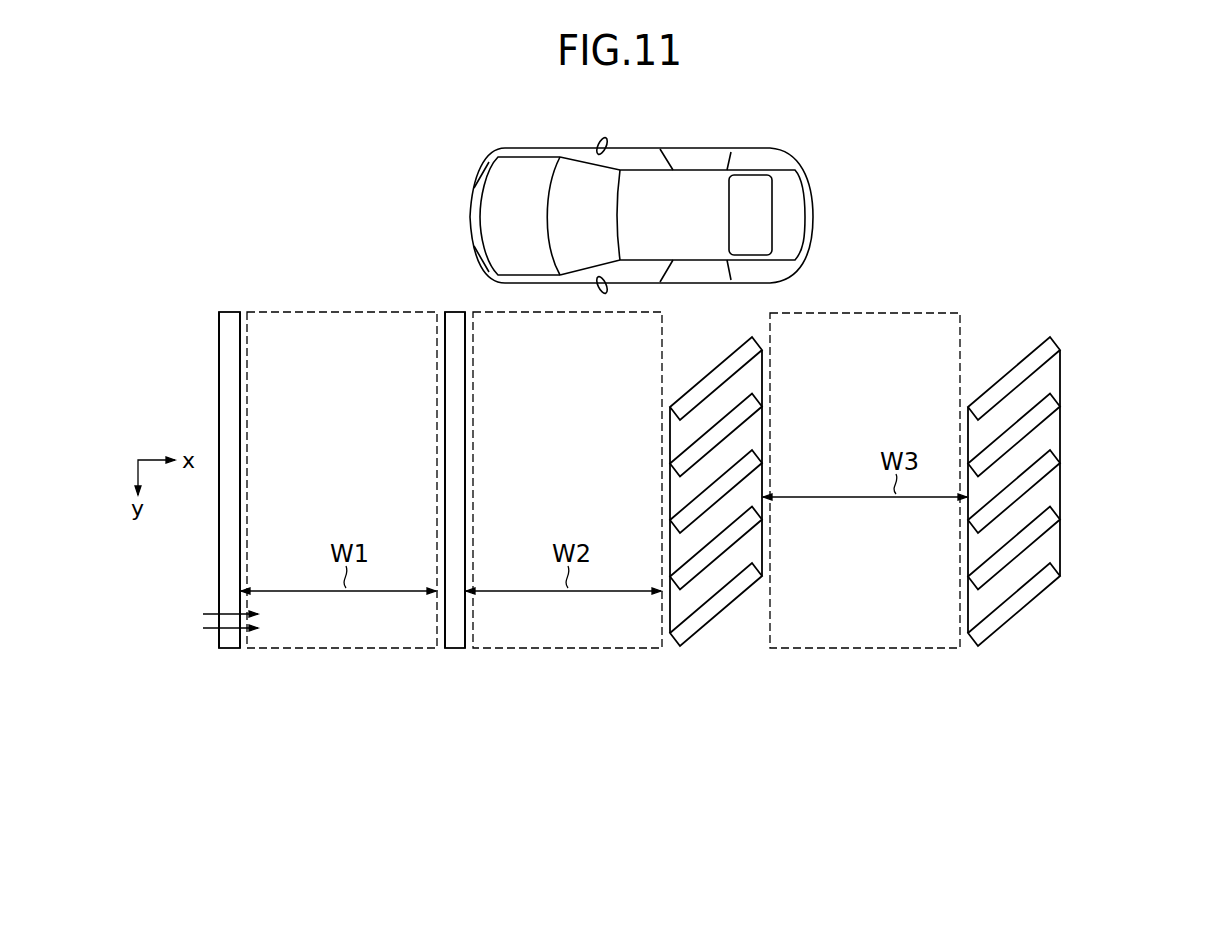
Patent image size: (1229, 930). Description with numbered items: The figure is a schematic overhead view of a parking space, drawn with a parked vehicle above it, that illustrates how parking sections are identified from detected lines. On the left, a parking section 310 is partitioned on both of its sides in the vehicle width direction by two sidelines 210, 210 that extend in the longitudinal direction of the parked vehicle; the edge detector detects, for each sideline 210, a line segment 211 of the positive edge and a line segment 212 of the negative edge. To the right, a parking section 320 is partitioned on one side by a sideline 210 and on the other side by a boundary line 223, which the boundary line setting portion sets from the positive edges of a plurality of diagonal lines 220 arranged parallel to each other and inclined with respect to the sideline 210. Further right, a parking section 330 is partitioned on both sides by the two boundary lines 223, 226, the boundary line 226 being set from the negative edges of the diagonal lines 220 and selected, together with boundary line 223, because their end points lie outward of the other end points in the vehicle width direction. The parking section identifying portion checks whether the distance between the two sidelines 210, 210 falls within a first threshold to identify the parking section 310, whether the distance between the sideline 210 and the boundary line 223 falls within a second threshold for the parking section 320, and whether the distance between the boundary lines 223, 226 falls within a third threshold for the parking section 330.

The sideline 210 is at (232, 650).
The line segment of positive edge 211 is at (218, 334).
The line segment of negative edge 212 is at (241, 334).
The diagonal line 220 is at (748, 344).
The boundary line 223 is at (668, 607).
The boundary line 226 is at (763, 556).
The parking section 310 is at (360, 442).
The parking section 320 is at (592, 442).
The parking section 330 is at (915, 397).